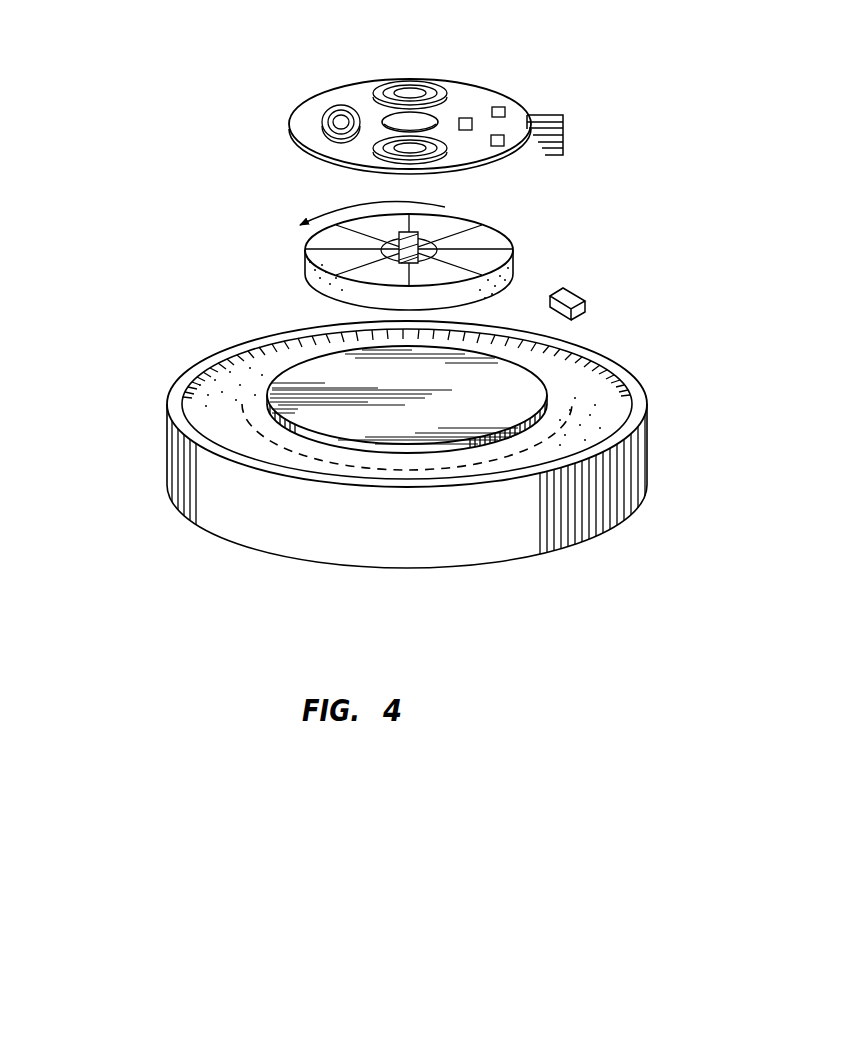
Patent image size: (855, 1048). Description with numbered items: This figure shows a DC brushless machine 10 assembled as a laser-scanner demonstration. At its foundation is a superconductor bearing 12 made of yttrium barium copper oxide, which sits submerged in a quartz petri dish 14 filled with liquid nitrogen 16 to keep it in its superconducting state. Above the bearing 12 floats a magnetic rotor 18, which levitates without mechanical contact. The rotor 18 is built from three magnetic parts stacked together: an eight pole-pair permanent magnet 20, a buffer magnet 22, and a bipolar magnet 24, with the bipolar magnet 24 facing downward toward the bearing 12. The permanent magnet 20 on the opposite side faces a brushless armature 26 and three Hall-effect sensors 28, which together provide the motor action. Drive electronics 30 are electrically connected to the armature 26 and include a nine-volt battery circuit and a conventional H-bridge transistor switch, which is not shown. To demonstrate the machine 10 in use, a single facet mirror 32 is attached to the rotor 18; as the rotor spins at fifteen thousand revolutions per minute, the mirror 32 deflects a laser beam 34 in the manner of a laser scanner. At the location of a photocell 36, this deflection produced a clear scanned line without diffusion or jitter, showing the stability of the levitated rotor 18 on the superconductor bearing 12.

The DC brushless machine 10 is at (148, 102).
The superconductor bearing 12 is at (520, 390).
The quartz petri dish 14 is at (633, 393).
The liquid nitrogen 16 is at (598, 429).
The magnetic rotor 18 is at (518, 227).
The eight pole-pair permanent magnet 20 is at (305, 245).
The buffer magnet 22 is at (306, 287).
The bipolar magnet 24 is at (348, 320).
The brushless armature 26 is at (338, 92).
The Hall-effect sensors 28 is at (500, 108).
The drive electronics 30 is at (550, 117).
The single facet mirror 32 is at (419, 232).
The laser beam 34 is at (186, 354).
The photocell 36 is at (573, 297).